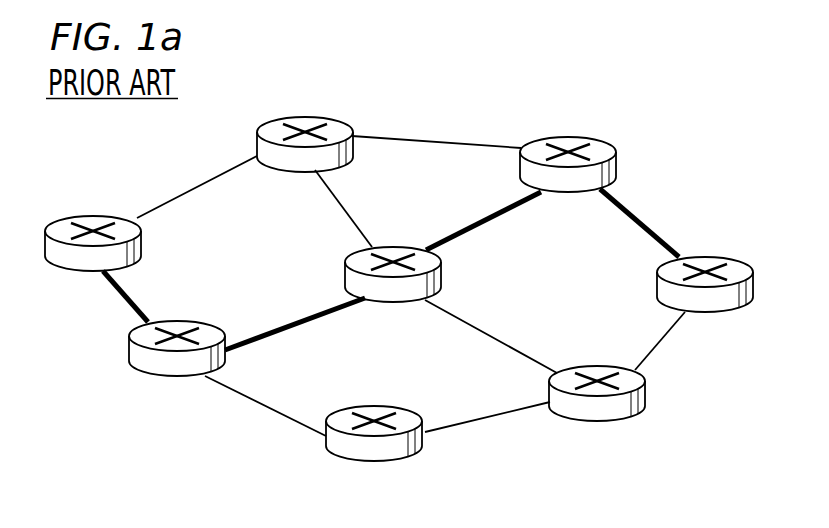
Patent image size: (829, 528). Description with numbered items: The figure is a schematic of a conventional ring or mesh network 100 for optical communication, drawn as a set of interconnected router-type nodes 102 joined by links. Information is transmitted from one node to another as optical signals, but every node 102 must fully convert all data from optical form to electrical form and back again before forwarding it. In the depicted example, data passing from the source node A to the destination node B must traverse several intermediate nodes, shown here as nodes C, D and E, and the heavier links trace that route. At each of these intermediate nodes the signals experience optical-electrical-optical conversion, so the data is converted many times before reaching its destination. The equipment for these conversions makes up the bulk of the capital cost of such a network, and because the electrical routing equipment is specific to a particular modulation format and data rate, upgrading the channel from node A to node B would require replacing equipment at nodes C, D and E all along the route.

The ring or mesh network 100 is at (428, 100).
The node 102 is at (400, 288).
The source node A is at (82, 243).
The destination node B is at (717, 284).
The intermediate node C is at (166, 348).
The intermediate node D is at (381, 274).
The intermediate node E is at (579, 164).